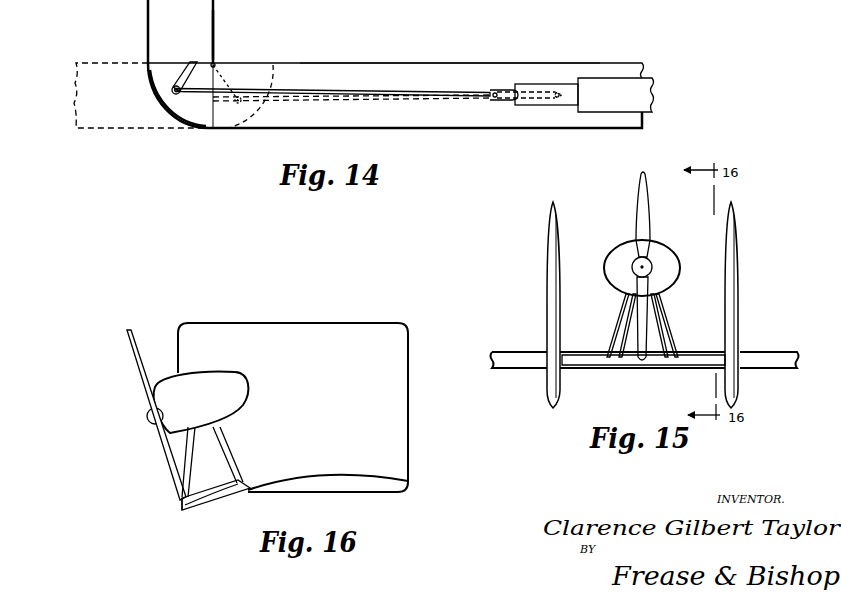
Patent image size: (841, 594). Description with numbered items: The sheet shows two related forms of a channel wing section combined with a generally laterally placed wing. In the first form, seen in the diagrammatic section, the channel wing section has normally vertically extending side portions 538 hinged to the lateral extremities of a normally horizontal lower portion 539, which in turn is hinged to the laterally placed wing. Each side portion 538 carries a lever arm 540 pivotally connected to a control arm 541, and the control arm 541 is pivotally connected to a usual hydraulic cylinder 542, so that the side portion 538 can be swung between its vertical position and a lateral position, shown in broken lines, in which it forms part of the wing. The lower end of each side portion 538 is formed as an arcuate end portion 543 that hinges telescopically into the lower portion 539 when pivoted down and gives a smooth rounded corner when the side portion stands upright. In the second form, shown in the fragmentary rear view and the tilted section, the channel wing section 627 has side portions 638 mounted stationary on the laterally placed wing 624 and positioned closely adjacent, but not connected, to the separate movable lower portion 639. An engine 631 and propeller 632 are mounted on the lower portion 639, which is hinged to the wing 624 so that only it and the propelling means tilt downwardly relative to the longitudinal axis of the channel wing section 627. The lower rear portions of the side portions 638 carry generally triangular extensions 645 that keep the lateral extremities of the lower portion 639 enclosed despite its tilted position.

In FIG. 14, the side portions 538 is at (202, 21).
In FIG. 14, the lower portion 539 is at (478, 72).
In FIG. 14, the lever arms 540 is at (182, 73).
In FIG. 14, the control arms 541 is at (373, 92).
In FIG. 14, the hydraulic cylinder 542 is at (623, 93).
In FIG. 14, the arcuate end portion 543 is at (180, 110).
In FIG. 15, the laterally placed wing 624 is at (500, 378).
In FIG. 16, the laterally placed wing 624 is at (368, 503).
In FIG. 15, the channel wing section 627 is at (538, 227).
In FIG. 15, the engine 631 is at (662, 253).
In FIG. 15, the propeller 632 is at (640, 216).
In FIG. 15, the side portions 638 is at (552, 305).
In FIG. 16, the side portions 638 is at (245, 342).
In FIG. 15, the lower portion 639 is at (595, 362).
In FIG. 16, the lower portion 639 is at (213, 490).
In FIG. 16, the triangular extensions 645 is at (182, 507).